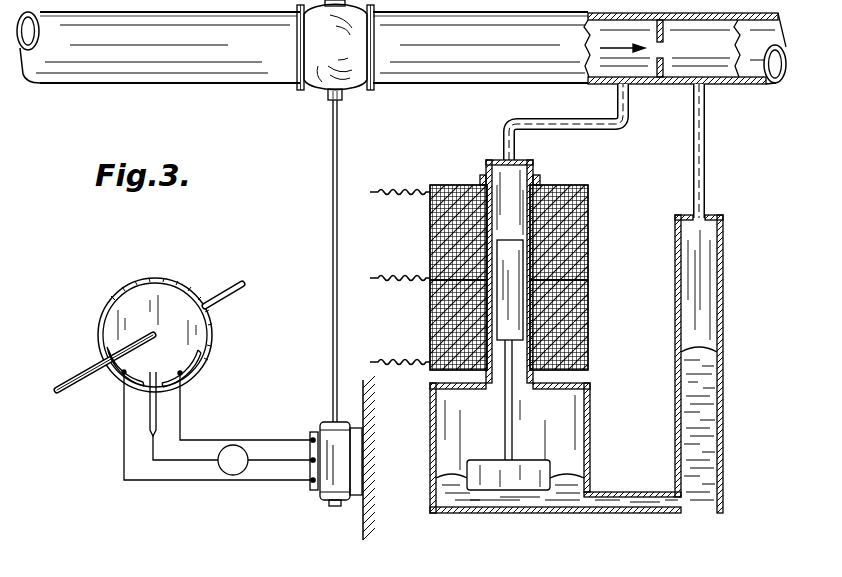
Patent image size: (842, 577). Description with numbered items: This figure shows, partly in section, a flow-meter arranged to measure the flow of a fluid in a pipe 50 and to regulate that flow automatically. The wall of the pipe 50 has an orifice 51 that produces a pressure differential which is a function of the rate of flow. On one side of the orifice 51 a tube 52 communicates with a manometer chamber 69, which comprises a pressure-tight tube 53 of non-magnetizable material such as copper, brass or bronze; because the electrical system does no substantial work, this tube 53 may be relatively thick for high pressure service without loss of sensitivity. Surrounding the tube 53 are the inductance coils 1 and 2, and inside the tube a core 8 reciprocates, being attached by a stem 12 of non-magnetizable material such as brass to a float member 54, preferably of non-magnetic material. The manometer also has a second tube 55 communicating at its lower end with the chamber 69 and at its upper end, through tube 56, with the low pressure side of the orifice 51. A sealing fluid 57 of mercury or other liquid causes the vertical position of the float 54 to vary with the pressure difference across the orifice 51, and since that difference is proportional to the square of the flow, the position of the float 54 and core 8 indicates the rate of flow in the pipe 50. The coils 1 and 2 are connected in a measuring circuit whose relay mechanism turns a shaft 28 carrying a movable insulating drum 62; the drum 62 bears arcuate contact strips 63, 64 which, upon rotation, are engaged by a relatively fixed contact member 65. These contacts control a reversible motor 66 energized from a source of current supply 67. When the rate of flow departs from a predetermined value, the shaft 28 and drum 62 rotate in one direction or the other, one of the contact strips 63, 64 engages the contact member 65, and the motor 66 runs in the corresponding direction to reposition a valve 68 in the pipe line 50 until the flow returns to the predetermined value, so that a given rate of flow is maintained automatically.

The inductance coil 1 is at (590, 229).
The inductance coil 2 is at (590, 314).
The core 8 is at (510, 281).
The stem 12 is at (513, 410).
The shaft 28 is at (80, 372).
The pipe 50 is at (461, 68).
The orifice 51 is at (671, 62).
The tube 52 is at (604, 128).
The pressure-tight tube 53 is at (534, 172).
The float member 54 is at (514, 482).
The second tube 55 is at (725, 316).
The tube 56 is at (705, 182).
The sealing fluid 57 is at (712, 398).
The insulating drum 62 is at (195, 337).
The arcuate contact strip 63 is at (118, 372).
The arcuate contact strip 64 is at (200, 366).
The contact member 65 is at (157, 413).
The reversible motor 66 is at (333, 427).
The source of current supply 67 is at (237, 468).
The valve 68 is at (320, 68).
The manometer chamber 69 is at (592, 432).